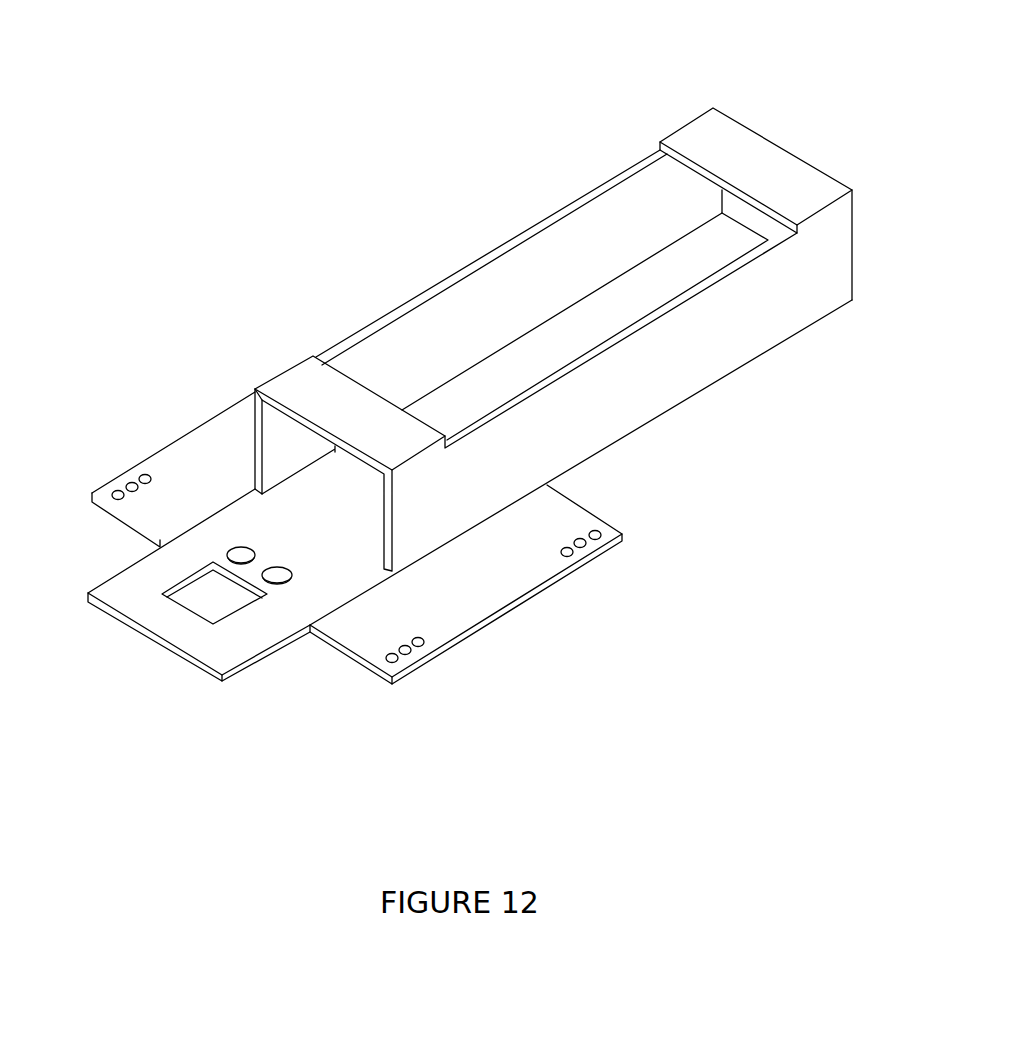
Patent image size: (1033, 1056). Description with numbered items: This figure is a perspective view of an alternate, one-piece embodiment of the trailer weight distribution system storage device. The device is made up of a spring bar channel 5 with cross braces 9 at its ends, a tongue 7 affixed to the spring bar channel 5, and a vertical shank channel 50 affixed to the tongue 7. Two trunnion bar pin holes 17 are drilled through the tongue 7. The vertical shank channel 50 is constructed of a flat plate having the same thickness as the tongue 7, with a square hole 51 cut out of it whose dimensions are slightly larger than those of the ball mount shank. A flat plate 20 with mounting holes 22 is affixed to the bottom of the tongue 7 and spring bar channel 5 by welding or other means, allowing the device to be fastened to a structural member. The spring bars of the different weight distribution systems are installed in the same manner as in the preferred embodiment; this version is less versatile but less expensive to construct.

The spring bar channel 5 is at (553, 405).
The tongue 7 is at (308, 537).
The cross braces 9 is at (700, 142).
The trunnion bar pin holes 17 is at (239, 547).
The flat plate 20 is at (468, 567).
The mounting holes 22 is at (133, 486).
The vertical shank channel 50 is at (240, 632).
The square hole 51 is at (208, 602).